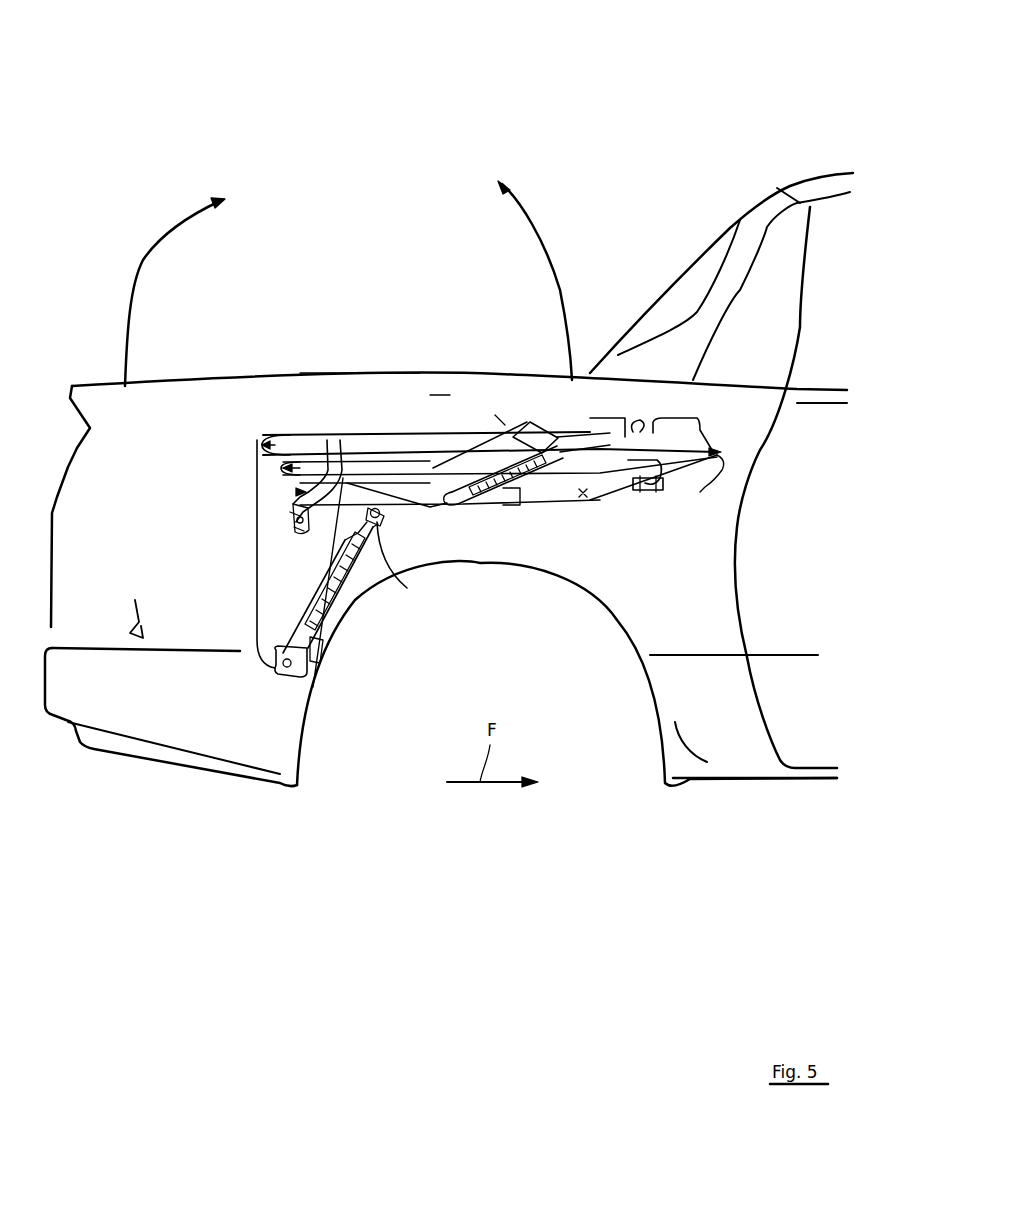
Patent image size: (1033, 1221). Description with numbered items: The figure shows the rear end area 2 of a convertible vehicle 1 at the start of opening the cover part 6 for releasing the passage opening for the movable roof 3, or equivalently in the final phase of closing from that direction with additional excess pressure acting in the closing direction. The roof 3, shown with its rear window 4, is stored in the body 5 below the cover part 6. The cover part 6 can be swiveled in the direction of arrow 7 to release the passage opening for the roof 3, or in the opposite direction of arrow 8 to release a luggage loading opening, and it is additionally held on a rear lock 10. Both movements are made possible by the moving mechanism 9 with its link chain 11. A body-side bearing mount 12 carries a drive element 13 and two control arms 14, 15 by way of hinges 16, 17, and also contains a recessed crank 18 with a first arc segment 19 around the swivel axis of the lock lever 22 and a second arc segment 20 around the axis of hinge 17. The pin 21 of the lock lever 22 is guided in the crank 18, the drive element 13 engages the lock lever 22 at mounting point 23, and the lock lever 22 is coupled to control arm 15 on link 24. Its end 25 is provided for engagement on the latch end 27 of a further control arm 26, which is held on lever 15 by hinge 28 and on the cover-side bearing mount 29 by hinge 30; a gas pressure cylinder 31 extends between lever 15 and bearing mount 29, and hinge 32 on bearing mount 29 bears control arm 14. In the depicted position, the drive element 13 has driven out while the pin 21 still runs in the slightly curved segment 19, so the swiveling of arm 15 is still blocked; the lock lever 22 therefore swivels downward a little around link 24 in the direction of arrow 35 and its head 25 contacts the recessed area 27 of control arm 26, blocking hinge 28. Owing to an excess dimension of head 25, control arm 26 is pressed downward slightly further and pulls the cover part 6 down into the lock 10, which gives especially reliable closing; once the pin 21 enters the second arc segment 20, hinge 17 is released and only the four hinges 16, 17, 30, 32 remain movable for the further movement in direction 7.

The convertible vehicle 1 is at (597, 85).
The rear end area 2 is at (458, 146).
The movable roof 3 is at (815, 158).
The rear window 4 is at (690, 280).
The body 5 is at (731, 723).
The cover part 6 is at (352, 373).
The arrow 7 is at (566, 257).
The arrow 8 is at (137, 277).
The moving mechanism 9 is at (440, 385).
The rear lock 10 is at (146, 611).
The link chain 11 is at (500, 420).
The bearing mount 12 is at (287, 590).
The drive element 13 is at (323, 663).
The control arm 14 is at (384, 434).
The control arm 15 is at (417, 483).
The hinge 16 is at (262, 445).
The hinge 17 is at (283, 468).
The recessed crank 18 is at (300, 492).
The first arc segment 19 is at (300, 529).
The second arc segment 20 is at (334, 458).
The pin 21 is at (295, 515).
The lock lever 22 is at (402, 513).
The mounting point 23 is at (400, 577).
The link 24 is at (442, 508).
The end 25 is at (530, 422).
The control arm 26 is at (677, 467).
The latch end 27 is at (540, 475).
The hinge 28 is at (583, 498).
The cover-side bearing mount 29 is at (687, 418).
The hinge 30 is at (700, 492).
The drive-supporting element 31 is at (507, 486).
The hinge 32 is at (636, 436).
The arrow 35 is at (430, 500).